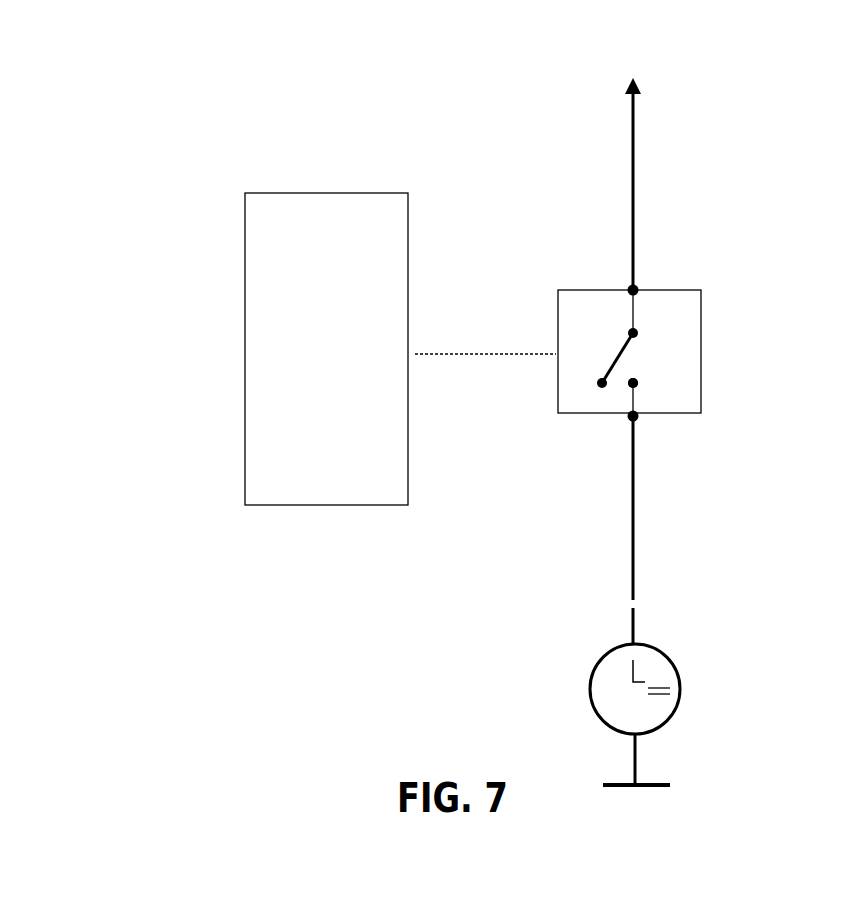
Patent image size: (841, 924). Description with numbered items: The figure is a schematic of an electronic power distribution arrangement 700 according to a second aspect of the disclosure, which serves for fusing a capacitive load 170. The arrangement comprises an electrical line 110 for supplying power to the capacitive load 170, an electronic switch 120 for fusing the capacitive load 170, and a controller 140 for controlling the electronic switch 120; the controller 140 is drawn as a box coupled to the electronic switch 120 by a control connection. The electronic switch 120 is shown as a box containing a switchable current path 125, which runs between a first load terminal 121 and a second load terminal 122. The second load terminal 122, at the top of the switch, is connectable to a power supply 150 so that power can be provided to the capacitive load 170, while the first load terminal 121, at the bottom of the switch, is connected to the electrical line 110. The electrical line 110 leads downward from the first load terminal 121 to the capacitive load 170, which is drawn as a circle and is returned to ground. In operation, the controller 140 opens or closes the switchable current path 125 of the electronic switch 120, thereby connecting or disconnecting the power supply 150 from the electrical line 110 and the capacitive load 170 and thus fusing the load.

The electronic power distribution arrangement 700 is at (98, 152).
The controller 140 is at (324, 190).
The power supply 150 is at (647, 84).
The electronic switch 120 is at (586, 287).
The second load terminal 122 is at (641, 287).
The switchable current path 125 is at (641, 400).
The first load terminal 121 is at (628, 428).
The electrical line 110 is at (639, 574).
The capacitive load 170 is at (681, 668).